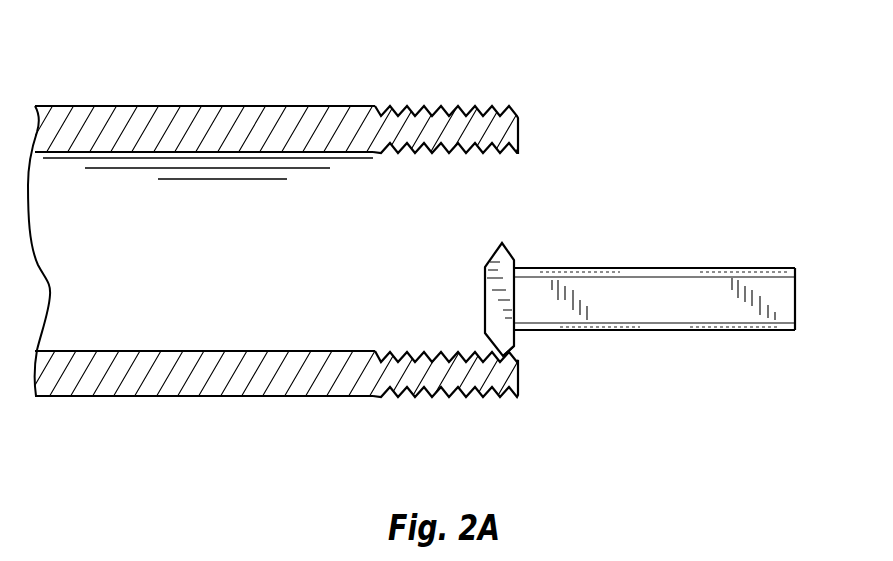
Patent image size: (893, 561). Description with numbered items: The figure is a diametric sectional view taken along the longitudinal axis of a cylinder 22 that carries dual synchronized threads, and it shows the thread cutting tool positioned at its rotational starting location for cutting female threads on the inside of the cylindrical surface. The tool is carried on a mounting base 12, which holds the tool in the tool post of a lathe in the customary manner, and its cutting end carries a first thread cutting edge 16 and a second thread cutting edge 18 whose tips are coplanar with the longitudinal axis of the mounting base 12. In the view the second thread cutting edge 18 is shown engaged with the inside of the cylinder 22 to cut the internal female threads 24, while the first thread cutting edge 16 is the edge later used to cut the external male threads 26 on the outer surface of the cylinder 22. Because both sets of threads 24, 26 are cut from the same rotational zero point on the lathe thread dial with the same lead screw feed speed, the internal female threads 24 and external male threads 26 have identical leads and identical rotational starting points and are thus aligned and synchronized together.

The mounting base 12 is at (685, 295).
The first thread cutting edge 16 is at (504, 243).
The second thread cutting edge 18 is at (512, 363).
The cylinder 22 is at (235, 365).
The internal female threads 24 is at (441, 153).
The external male threads 26 is at (438, 107).